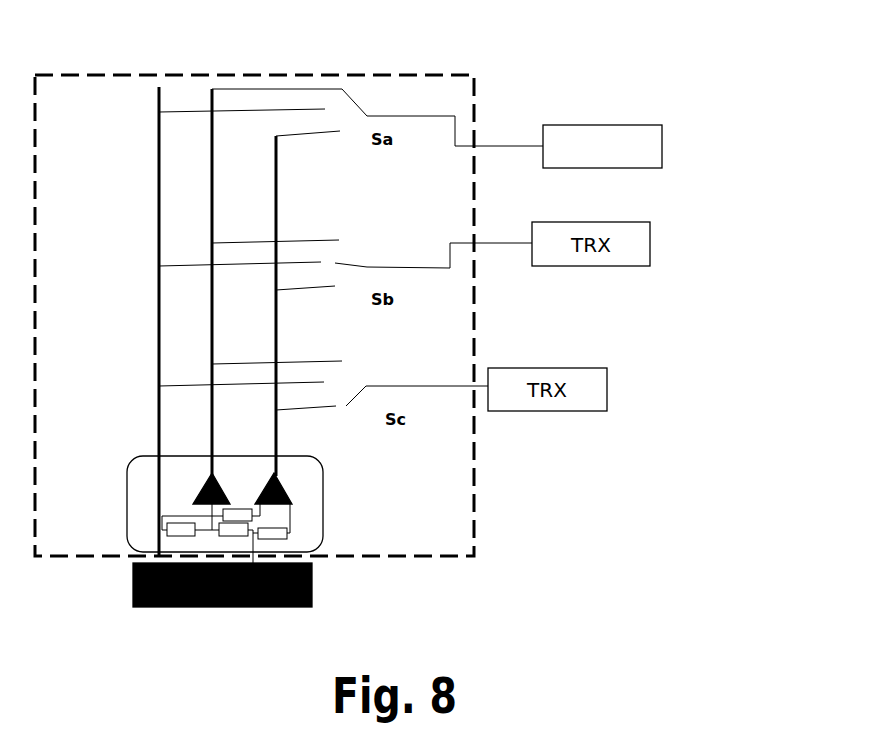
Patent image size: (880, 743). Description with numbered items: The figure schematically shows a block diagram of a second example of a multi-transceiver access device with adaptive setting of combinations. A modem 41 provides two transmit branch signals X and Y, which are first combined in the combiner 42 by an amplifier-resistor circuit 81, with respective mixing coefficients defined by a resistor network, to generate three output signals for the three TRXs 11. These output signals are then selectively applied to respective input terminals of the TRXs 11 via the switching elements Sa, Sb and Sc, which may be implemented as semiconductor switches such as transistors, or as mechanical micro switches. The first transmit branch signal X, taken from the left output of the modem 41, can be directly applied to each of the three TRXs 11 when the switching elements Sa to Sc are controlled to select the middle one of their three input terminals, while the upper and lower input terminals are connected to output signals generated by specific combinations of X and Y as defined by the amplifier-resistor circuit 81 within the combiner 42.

The TRX 11 is at (636, 116).
The combiner 42 is at (295, 346).
The amplifier-resistor circuit 81 is at (283, 509).
The modem 41 is at (245, 602).